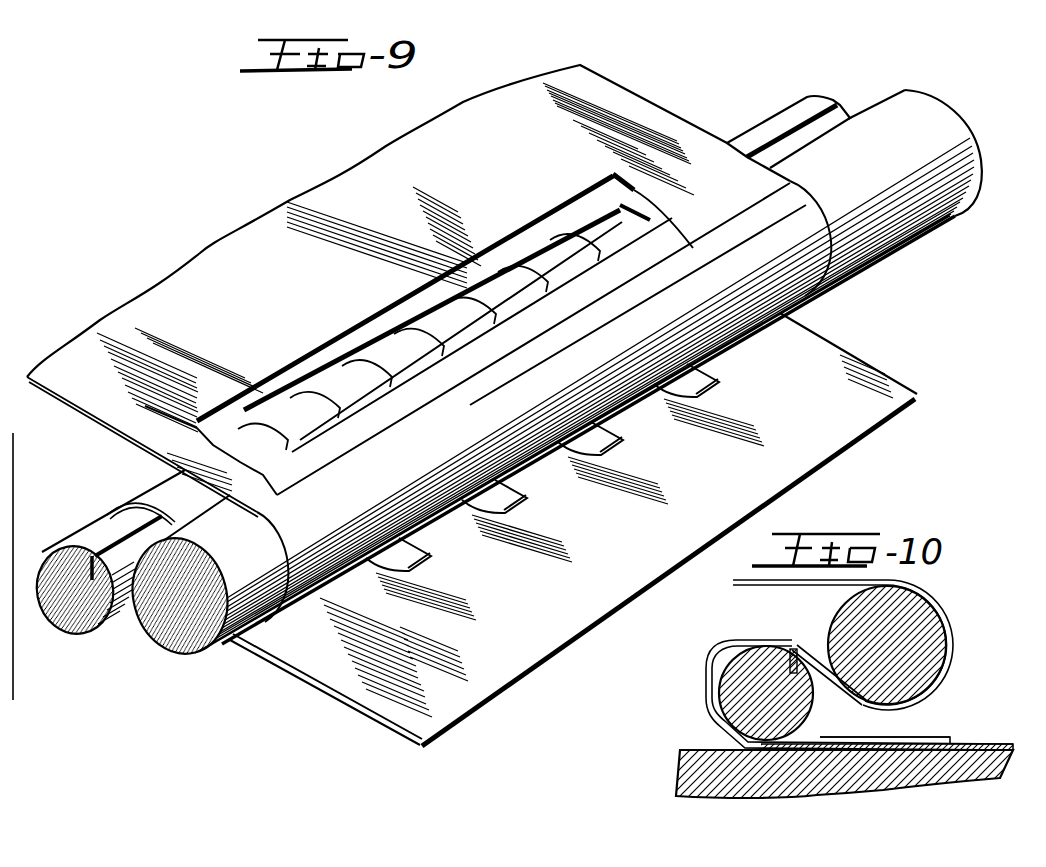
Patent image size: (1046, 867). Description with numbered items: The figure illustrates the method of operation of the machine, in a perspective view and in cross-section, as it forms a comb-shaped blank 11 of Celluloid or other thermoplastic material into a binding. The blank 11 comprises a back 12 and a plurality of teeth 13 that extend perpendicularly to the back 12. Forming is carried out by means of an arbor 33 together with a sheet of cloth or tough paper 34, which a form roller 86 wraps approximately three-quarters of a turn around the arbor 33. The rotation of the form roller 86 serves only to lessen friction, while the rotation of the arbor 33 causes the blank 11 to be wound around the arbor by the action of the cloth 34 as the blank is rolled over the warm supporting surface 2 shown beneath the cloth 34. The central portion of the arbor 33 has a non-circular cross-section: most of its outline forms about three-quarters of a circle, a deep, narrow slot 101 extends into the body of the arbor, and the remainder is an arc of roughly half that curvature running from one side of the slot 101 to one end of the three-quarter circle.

In FIG. 10, the base support 2 is at (1000, 774).
In FIG. 9, the blank 11 is at (394, 358).
In FIG. 10, the blank 11 is at (897, 735).
In FIG. 9, the back 12 is at (358, 385).
In FIG. 10, the back 12 is at (790, 649).
In FIG. 9, the teeth 13 is at (428, 559).
In FIG. 10, the teeth 13 is at (944, 738).
In FIG. 9, the arbor 33 is at (83, 533).
In FIG. 10, the arbor 33 is at (744, 696).
In FIG. 9, the cloth 34 is at (316, 666).
In FIG. 10, the cloth 34 is at (1006, 744).
In FIG. 9, the form roller 86 is at (175, 651).
In FIG. 10, the form roller 86 is at (930, 630).
In FIG. 9, the slot 101 is at (112, 528).